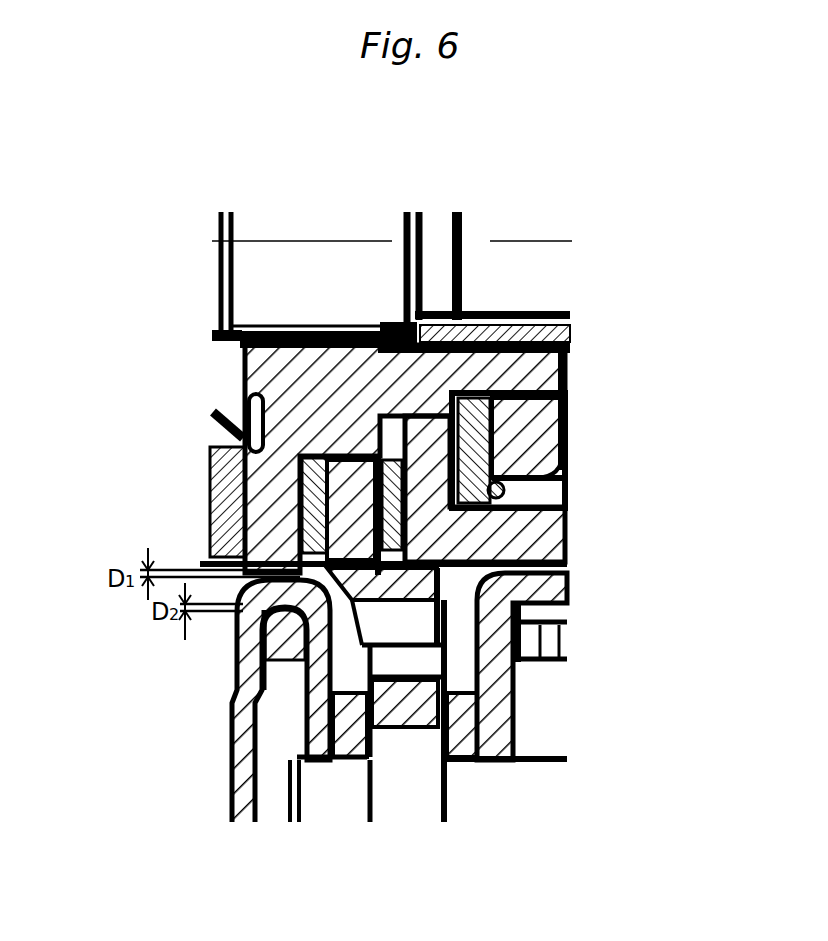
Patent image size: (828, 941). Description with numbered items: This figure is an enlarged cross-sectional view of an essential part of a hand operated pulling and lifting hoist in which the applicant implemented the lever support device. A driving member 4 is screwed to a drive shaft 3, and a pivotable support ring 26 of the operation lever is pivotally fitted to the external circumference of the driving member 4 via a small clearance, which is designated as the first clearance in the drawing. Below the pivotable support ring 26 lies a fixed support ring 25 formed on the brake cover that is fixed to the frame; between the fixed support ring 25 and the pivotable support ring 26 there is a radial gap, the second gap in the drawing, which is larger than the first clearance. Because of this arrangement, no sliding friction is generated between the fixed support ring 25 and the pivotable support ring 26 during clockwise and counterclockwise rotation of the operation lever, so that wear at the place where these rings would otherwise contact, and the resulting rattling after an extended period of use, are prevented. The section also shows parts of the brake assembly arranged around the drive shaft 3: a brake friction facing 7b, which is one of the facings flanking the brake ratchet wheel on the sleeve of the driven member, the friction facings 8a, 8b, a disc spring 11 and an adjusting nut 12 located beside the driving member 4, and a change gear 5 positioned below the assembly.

The drive shaft 3 is at (246, 281).
The driving member 4 is at (243, 366).
The brake friction facing 7b is at (210, 462).
The friction facing 8a is at (212, 505).
The friction facing 8b is at (552, 520).
The disc spring 11 is at (492, 468).
The adjusting nut 12 is at (567, 392).
The pivotable support ring 26 is at (240, 636).
The fixed support ring 25 is at (299, 660).
The change gear 5 is at (420, 627).